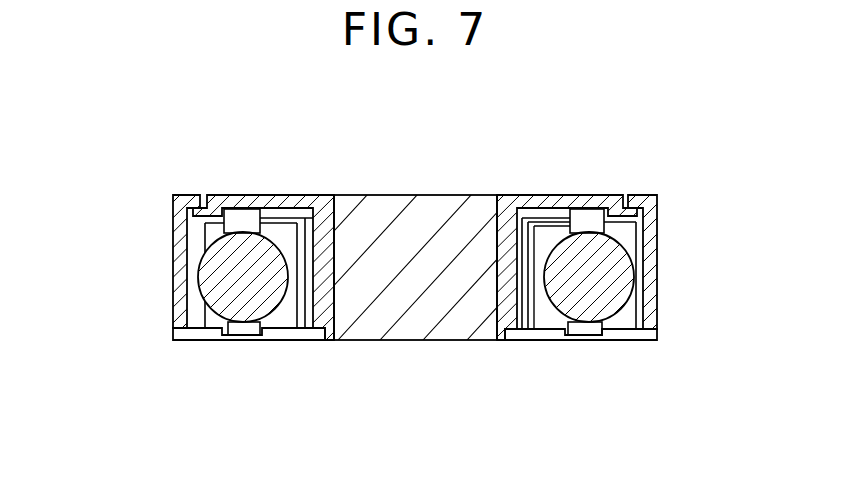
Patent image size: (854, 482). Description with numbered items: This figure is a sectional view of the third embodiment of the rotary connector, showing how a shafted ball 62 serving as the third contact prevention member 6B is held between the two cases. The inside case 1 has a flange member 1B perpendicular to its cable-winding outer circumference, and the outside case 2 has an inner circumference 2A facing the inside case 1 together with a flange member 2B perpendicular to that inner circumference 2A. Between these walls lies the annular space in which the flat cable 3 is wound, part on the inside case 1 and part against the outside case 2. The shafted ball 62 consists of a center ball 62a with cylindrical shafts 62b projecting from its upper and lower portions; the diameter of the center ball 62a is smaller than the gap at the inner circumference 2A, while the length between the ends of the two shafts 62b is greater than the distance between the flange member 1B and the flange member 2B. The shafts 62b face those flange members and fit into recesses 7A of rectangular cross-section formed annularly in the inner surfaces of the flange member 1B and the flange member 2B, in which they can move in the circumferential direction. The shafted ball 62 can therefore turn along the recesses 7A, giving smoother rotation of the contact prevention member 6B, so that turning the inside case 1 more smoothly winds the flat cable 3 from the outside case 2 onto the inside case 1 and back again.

The inside case 1 is at (415, 229).
The flange member 1B is at (288, 210).
The outside case 2 is at (417, 300).
The inner circumference 2A is at (185, 247).
The flange member 2B is at (193, 332).
The flat cable 3 is at (527, 332).
The third contact prevention member 6B is at (412, 279).
The shafted ball 62 is at (430, 279).
The center ball 62a is at (645, 314).
The cylindrical shaft 62b is at (643, 228).
The recess 7A is at (242, 207).